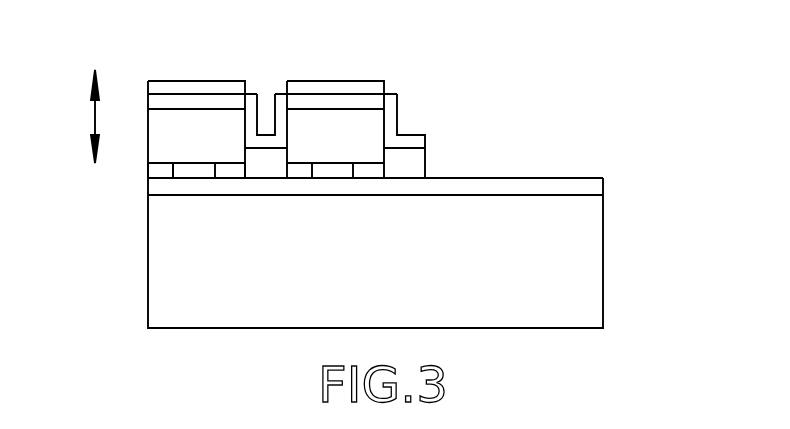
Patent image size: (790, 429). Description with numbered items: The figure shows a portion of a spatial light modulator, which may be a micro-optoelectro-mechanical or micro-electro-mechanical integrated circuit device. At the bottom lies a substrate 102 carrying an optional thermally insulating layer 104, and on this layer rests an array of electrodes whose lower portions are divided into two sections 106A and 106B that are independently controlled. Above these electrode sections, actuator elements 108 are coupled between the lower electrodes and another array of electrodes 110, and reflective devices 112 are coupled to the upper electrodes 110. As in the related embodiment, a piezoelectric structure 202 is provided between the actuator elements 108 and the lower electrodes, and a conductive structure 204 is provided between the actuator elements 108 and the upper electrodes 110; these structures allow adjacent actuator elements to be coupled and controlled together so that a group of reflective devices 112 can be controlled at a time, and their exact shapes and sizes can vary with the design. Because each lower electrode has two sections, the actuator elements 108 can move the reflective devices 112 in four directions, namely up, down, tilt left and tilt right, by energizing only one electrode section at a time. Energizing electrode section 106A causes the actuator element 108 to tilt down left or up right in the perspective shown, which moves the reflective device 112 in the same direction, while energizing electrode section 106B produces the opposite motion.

The substrate 102 is at (598, 260).
The thermally insulating layer 104 is at (600, 182).
The electrode section 106A is at (157, 168).
The electrode section 106B is at (224, 170).
The actuator element 108 is at (376, 142).
The electrode 110 is at (376, 103).
The reflective device 112 is at (376, 85).
The piezoelectric structure 202 is at (413, 167).
The conductive structure 204 is at (254, 106).